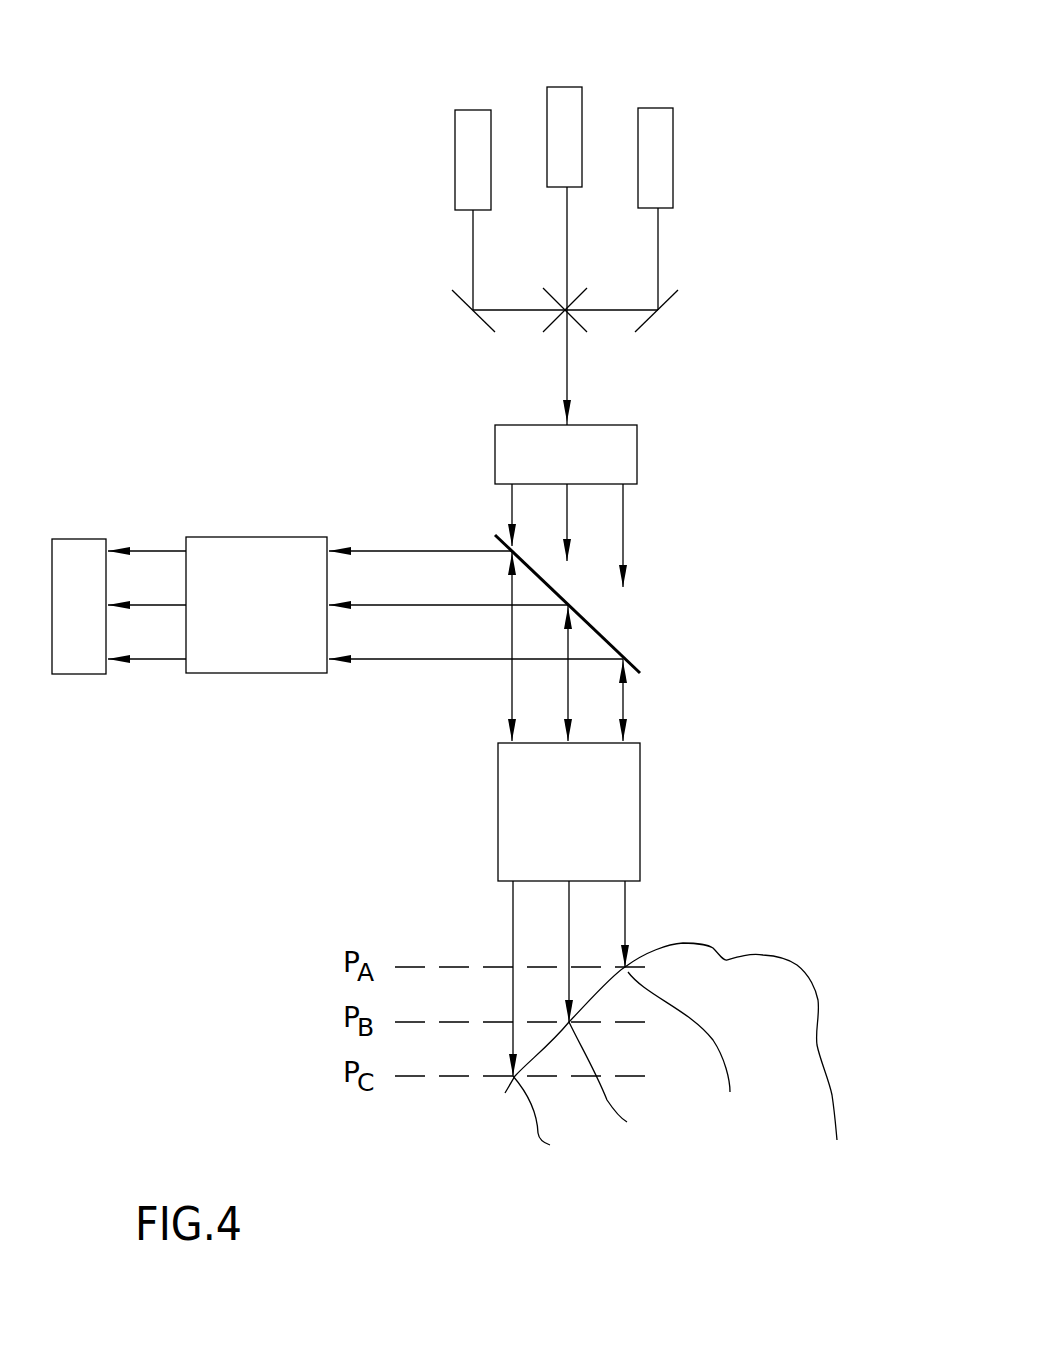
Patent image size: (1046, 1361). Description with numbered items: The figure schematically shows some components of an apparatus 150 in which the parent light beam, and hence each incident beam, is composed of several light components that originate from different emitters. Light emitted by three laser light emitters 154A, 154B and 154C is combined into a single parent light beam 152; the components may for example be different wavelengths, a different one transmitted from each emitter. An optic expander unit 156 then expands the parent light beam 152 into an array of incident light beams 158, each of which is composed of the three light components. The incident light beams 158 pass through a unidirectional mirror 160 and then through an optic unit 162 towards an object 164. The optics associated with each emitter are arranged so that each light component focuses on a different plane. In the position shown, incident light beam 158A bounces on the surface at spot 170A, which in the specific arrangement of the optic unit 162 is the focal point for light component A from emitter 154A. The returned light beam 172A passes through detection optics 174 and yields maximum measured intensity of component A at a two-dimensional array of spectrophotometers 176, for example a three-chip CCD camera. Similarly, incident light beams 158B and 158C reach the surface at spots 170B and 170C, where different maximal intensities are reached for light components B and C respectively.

The apparatus 150 is at (782, 443).
The parent light beam 152 is at (567, 369).
The laser light emitter 154A is at (660, 108).
The laser light emitter 154B is at (565, 82).
The laser light emitter 154C is at (469, 109).
The optic expander unit 156 is at (638, 437).
The incident light beams 158 is at (623, 530).
The incident light beam 158A is at (628, 917).
The incident light beam 158B is at (570, 917).
The incident light beam 158C is at (512, 943).
The unidirectional mirror 160 is at (598, 628).
The optic unit 162 is at (641, 838).
The object 164 is at (790, 978).
The spot 170A is at (694, 1051).
The spot 170B is at (627, 1091).
The spot 170C is at (557, 1130).
The returned light beam 172A is at (427, 659).
The detection optics 174 is at (260, 550).
The two-dimensional array of spectrophotometers 176 is at (88, 675).